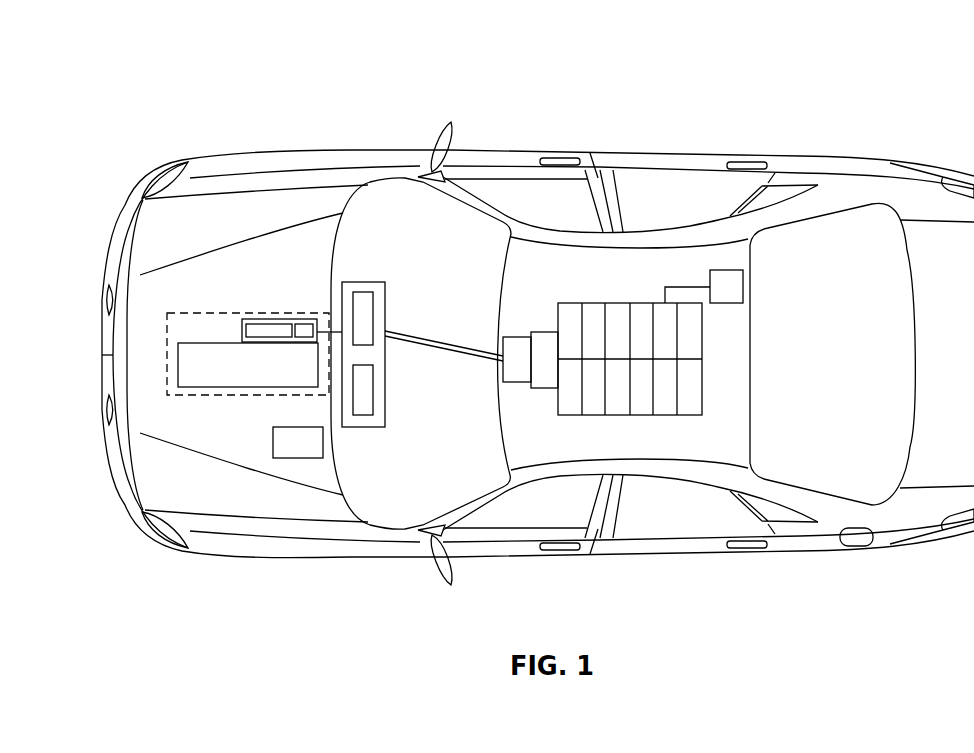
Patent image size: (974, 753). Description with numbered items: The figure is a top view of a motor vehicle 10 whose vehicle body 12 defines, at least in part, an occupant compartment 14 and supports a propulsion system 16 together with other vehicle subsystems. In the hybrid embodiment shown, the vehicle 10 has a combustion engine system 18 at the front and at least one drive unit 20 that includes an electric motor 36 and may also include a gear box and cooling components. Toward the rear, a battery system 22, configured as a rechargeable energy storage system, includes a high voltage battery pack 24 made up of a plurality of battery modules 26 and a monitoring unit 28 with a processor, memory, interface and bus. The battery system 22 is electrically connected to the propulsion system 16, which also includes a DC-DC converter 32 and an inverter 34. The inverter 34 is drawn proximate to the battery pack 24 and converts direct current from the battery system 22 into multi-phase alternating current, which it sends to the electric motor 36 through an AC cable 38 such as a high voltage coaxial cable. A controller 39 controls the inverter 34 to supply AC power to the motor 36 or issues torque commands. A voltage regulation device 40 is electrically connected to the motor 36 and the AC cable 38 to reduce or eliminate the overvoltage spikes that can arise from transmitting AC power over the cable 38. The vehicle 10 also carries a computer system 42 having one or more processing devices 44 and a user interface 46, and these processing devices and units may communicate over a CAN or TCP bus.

The motor vehicle 10 is at (89, 70).
The vehicle body 12 is at (604, 144).
The occupant compartment 14 is at (645, 474).
The propulsion system 16 is at (186, 310).
The combustion engine system 18 is at (272, 388).
The drive unit 20 is at (270, 313).
The battery system 22 is at (729, 400).
The high voltage battery pack 24 is at (703, 344).
The battery modules 26 is at (590, 313).
The monitoring unit 28 is at (745, 288).
The DC-DC converter 32 is at (548, 330).
The inverter 34 is at (494, 346).
The electric motor 36 is at (272, 323).
The AC cable 38 is at (457, 352).
The controller 39 is at (272, 452).
The voltage regulation device 40 is at (306, 322).
The computer system 42 is at (363, 266).
The processing devices 44 is at (385, 315).
The user interface 46 is at (374, 391).